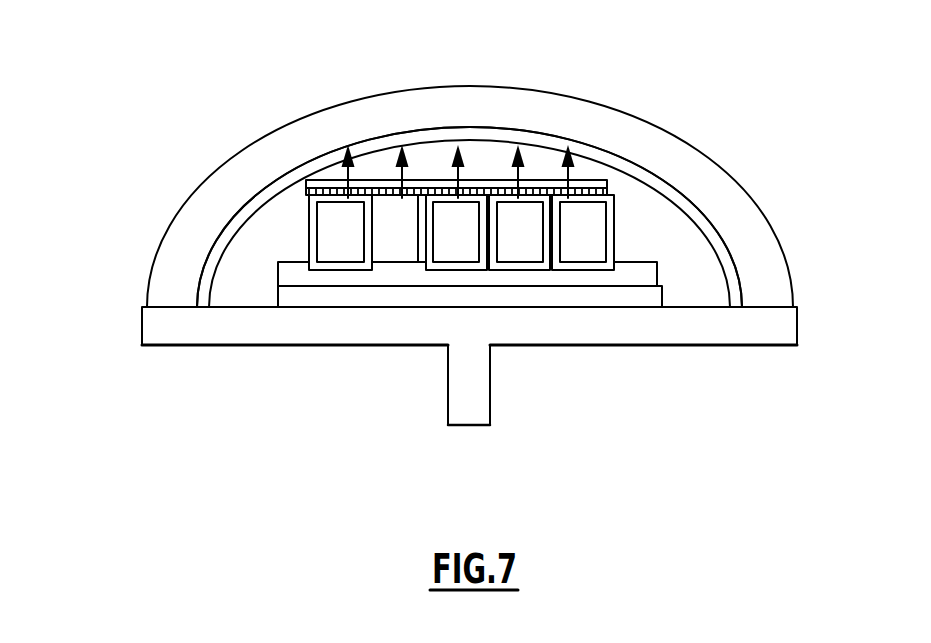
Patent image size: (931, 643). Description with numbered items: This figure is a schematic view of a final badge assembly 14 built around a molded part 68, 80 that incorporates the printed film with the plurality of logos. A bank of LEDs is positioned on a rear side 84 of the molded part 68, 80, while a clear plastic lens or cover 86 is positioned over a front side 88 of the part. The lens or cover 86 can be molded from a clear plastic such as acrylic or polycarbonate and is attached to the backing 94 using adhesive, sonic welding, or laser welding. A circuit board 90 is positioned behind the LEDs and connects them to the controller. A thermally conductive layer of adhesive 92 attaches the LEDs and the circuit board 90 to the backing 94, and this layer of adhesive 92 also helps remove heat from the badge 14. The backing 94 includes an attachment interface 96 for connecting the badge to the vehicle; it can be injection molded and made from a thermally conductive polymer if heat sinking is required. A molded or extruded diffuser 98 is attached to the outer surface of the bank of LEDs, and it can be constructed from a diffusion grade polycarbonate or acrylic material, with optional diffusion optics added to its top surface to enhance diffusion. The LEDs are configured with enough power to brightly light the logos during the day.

The badge assembly 14 is at (434, 255).
The lens or cover 86 is at (468, 85).
The front side 88 is at (276, 181).
The molded part 68 is at (494, 265).
The molded part 80 is at (469, 266).
The rear side 84 is at (227, 246).
The circuit board 90 is at (293, 262).
The layer of adhesive 92 is at (622, 295).
The backing 94 is at (343, 345).
The attachment interface 96 is at (447, 398).
The diffuser 98 is at (483, 191).